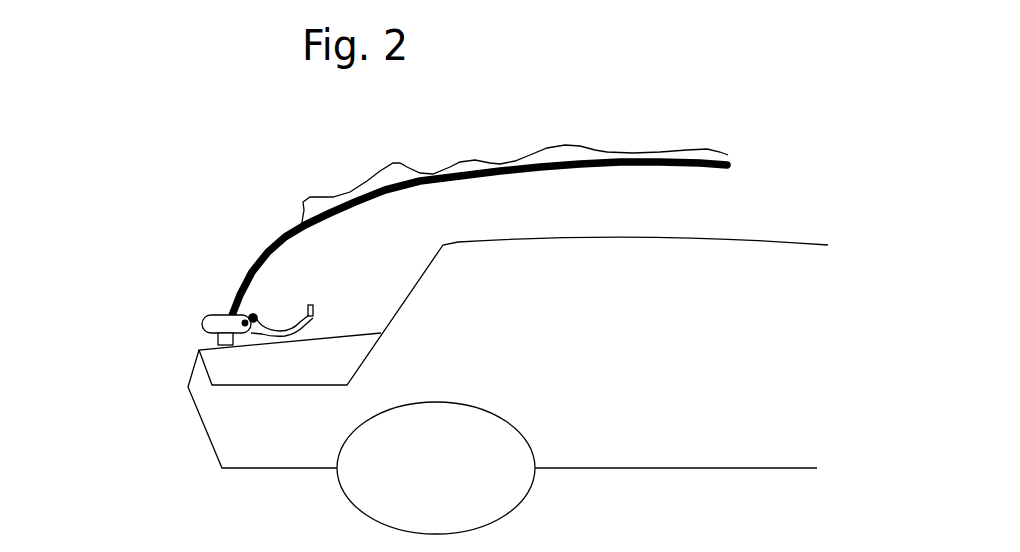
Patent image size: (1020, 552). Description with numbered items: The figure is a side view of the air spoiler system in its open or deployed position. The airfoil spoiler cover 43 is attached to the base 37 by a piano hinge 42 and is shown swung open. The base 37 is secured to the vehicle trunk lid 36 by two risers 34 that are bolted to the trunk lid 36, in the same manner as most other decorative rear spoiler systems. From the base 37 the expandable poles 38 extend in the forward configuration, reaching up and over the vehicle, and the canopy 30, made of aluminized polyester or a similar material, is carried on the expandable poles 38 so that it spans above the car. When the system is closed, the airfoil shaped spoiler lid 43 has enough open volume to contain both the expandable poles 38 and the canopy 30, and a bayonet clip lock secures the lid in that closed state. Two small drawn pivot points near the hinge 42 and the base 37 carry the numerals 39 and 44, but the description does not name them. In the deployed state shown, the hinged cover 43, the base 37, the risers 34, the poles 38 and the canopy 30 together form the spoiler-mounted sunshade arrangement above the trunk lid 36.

The canopy 30 is at (460, 162).
The expandable poles 38 is at (333, 213).
The base 37 is at (232, 327).
The risers 34 is at (217, 341).
The vehicle trunk lid 36 is at (220, 378).
The pivot point 39 is at (245, 323).
The piano hinge 42 is at (253, 318).
The airfoil spoiler cover 43 is at (275, 329).
The bracket 44 is at (313, 310).